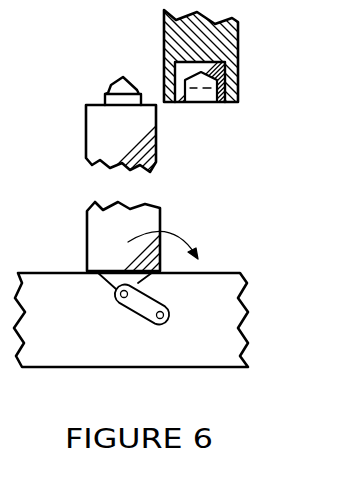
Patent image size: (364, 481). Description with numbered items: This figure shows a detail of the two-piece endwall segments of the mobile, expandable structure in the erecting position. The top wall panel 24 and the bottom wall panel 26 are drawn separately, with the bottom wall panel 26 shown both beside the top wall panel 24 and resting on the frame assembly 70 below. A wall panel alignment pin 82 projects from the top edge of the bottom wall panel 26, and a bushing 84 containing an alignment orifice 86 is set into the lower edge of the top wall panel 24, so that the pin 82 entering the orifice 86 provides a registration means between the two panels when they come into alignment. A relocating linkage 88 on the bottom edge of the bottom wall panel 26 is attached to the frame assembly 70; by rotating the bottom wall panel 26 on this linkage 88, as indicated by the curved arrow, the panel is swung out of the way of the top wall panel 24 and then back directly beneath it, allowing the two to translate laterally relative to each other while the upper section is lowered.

The top wall panel 24 is at (239, 43).
The bottom wall panel 26 is at (85, 140).
The frame assembly 70 is at (143, 367).
The wall panel alignment pin 82 is at (117, 80).
The bushing 84 is at (219, 102).
The alignment orifice 86 is at (197, 97).
The relocating linkage 88 is at (140, 307).